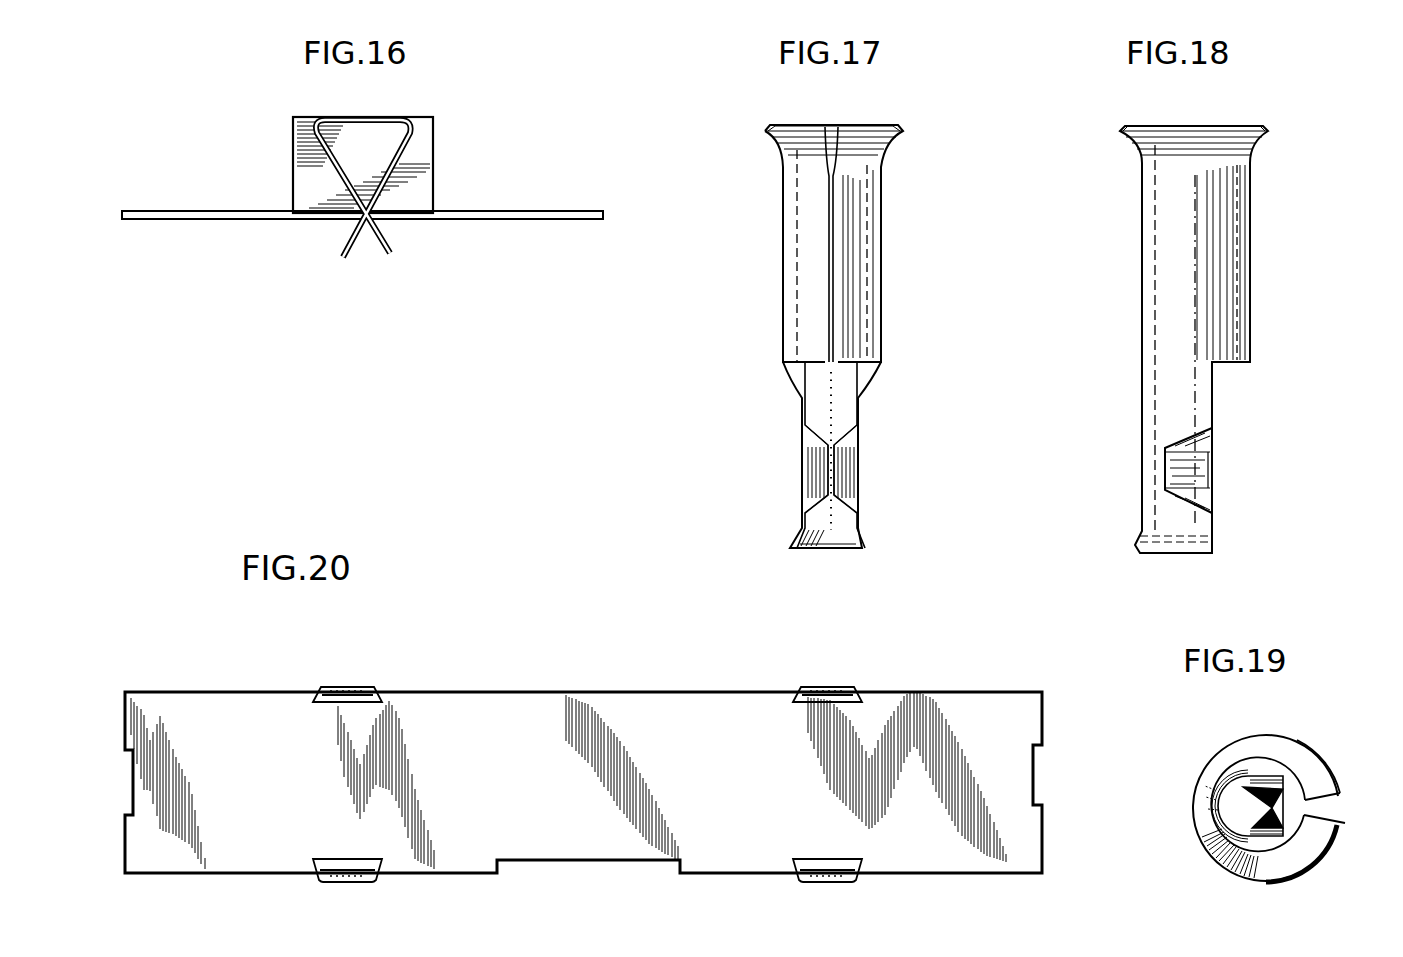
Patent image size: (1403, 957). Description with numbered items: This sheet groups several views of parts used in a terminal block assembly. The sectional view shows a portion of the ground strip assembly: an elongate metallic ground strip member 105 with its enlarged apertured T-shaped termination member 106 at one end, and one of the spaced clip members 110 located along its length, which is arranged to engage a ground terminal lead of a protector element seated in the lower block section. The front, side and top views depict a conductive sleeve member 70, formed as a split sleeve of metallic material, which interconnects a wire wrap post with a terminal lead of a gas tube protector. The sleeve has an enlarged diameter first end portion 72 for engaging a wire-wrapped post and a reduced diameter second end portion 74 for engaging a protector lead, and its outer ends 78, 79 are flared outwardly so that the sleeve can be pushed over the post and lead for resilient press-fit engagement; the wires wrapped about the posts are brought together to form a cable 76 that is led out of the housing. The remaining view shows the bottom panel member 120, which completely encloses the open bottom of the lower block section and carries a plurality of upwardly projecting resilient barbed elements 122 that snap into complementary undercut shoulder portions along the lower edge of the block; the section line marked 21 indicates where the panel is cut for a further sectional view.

In FIG. 16, the ground strip member 105 is at (437, 131).
In FIG. 16, the T-shaped termination member 106 is at (437, 182).
In FIG. 16, the clip member 110 is at (347, 241).
In FIG. 17, the conductive sleeve member 70 is at (782, 253).
In FIG. 18, the conductive sleeve member 70 is at (1140, 253).
In FIG. 19, the conductive sleeve member 70 is at (1188, 790).
In FIG. 17, the first end portion 72 is at (866, 239).
In FIG. 18, the first end portion 72 is at (1250, 266).
In FIG. 19, the first end portion 72 is at (1325, 779).
In FIG. 17, the second end portion 74 is at (862, 470).
In FIG. 18, the second end portion 74 is at (1205, 402).
In FIG. 19, the second end portion 74 is at (1265, 773).
In FIG. 19, the cable 76 is at (1297, 778).
In FIG. 17, the outer end 78 is at (886, 128).
In FIG. 18, the outer end 78 is at (1133, 129).
In FIG. 19, the outer end 78 is at (1330, 822).
In FIG. 17, the outer end 79 is at (816, 552).
In FIG. 18, the outer end 79 is at (1156, 556).
In FIG. 20, the bottom panel member 120 is at (672, 775).
In FIG. 20, the resilient barbed element 122 is at (341, 858).
In FIG. 20, the section line 21- 21 is at (842, 651).